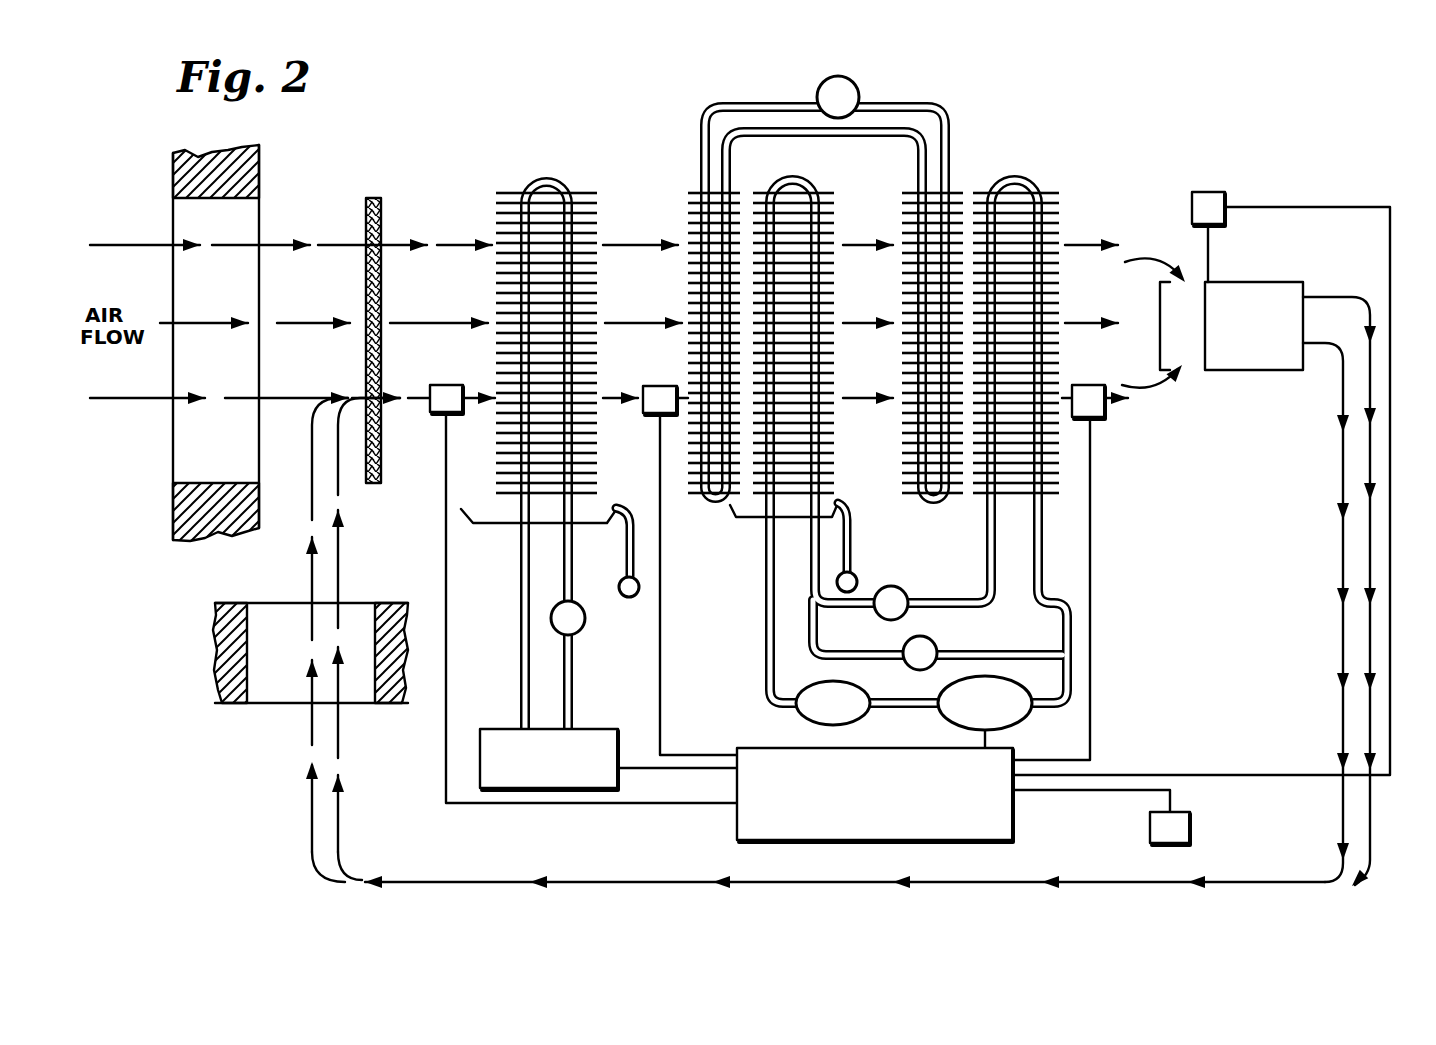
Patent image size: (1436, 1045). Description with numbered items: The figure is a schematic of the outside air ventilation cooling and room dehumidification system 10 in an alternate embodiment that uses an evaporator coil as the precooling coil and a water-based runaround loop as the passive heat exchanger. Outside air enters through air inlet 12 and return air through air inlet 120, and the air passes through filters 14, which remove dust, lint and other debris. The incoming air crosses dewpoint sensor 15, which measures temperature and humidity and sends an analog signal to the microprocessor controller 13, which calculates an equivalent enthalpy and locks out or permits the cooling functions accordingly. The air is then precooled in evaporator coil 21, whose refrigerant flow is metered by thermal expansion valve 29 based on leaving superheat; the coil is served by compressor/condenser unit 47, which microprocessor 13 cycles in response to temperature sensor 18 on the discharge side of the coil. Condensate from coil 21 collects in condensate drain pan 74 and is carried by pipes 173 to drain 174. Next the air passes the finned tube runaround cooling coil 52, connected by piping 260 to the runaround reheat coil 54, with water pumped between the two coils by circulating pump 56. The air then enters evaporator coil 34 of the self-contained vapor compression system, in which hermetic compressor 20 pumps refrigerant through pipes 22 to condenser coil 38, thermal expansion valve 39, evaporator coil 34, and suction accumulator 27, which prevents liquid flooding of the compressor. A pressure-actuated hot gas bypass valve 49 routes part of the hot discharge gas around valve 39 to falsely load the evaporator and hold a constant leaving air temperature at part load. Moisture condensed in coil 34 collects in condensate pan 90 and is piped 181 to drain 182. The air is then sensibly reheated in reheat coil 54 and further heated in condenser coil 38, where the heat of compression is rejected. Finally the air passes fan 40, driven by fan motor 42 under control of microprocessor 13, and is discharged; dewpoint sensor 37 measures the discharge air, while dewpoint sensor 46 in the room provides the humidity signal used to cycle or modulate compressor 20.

The outside air ventilation cooling and room dehumidification system 10 is at (177, 318).
The air inlet 12 is at (185, 215).
The filter 14 is at (373, 198).
The dewpoint sensor 15 is at (435, 385).
The temperature sensor 18 is at (660, 386).
The evaporator coil 21 is at (511, 190).
The thermal expansion valve 29 is at (586, 618).
The compressor/condenser unit 47 is at (491, 729).
The condensate drain pan 74 is at (493, 526).
The pipes 173 is at (626, 535).
The drain 174 is at (619, 592).
The runaround loop cooling coil 52 is at (698, 192).
The runaround loop reheat coil 54 is at (955, 192).
The circulating pump 56 is at (858, 78).
The piping 260 is at (823, 273).
The evaporator coil 34 is at (823, 190).
The condensate pan 90 is at (735, 520).
The pipe 181 is at (851, 520).
The drain 182 is at (857, 580).
The condenser coil 38 is at (1058, 190).
The thermal expansion valve 39 is at (903, 588).
The hot gas bypass valve 49 is at (938, 646).
The pipes 22 is at (925, 438).
The suction accumulator 27 is at (826, 681).
The hermetic compressor 20 is at (1010, 683).
The microprocessor controller 13 is at (782, 748).
The dewpoint sensor 37 is at (1090, 385).
The fan 40 is at (1270, 282).
The fan motor 42 is at (1212, 192).
The dewpoint sensor 46 is at (1192, 832).
The air inlet 120 is at (362, 614).